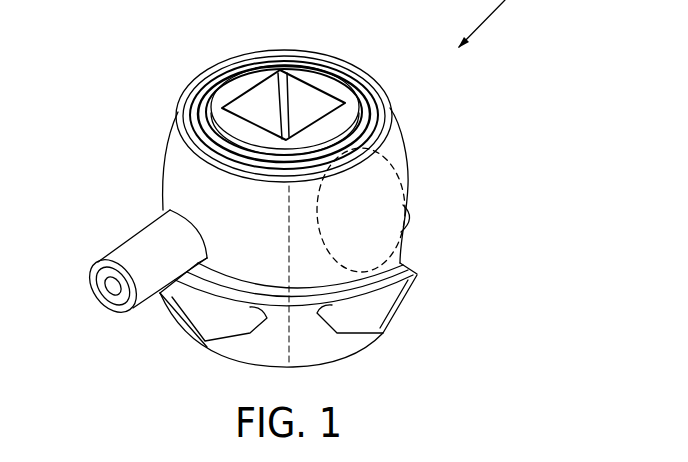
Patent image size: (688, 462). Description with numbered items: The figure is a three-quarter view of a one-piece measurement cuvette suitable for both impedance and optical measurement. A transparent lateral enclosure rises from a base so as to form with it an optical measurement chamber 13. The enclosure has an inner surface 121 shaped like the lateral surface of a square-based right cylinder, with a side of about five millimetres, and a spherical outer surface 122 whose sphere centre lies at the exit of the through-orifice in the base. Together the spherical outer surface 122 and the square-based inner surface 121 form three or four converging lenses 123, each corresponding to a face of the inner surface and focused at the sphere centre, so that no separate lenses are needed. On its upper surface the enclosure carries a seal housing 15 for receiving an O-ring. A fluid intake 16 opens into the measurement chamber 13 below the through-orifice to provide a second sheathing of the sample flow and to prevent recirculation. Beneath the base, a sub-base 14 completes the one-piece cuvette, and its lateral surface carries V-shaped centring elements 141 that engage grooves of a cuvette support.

The optical measurement chamber 13 is at (268, 89).
The seal housing 15 is at (202, 86).
The inner surface 121 is at (307, 97).
The spherical outer surface 122 is at (405, 135).
The converging lenses 123 is at (375, 204).
The fluid intake 16 is at (127, 255).
The sub-base 14 is at (322, 350).
The V-shaped centring elements 141 is at (380, 303).